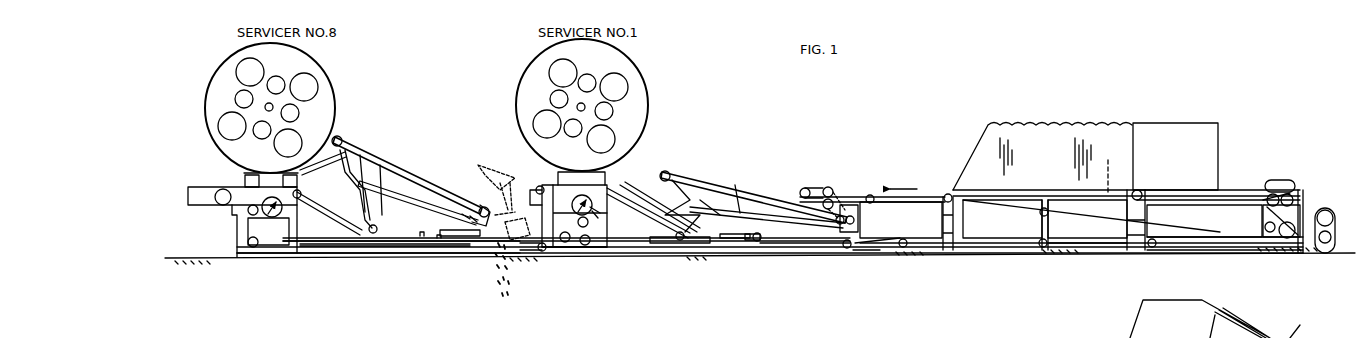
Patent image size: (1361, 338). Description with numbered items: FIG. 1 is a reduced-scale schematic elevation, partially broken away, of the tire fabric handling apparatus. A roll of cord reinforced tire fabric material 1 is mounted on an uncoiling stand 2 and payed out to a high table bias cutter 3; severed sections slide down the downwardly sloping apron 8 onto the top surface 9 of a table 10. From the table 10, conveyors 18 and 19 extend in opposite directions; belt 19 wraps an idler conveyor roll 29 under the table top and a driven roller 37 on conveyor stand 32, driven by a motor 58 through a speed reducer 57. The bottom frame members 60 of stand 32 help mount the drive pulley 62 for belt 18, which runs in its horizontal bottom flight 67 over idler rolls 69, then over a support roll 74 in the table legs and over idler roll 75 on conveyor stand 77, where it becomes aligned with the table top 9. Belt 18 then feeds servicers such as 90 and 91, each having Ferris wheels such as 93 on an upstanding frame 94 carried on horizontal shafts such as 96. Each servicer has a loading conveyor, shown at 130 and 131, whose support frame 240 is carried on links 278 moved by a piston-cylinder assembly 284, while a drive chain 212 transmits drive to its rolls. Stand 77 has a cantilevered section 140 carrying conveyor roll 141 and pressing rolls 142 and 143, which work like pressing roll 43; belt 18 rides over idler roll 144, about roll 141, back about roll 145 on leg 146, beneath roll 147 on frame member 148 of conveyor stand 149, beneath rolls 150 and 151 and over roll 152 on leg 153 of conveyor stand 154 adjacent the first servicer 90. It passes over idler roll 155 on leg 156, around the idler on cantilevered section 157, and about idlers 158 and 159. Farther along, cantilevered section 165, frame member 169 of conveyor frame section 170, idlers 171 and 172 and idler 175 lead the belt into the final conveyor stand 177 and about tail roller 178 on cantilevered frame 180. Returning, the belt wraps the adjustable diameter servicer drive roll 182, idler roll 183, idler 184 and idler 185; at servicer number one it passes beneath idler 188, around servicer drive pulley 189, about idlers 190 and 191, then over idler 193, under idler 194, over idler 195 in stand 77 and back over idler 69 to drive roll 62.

The roll of cord reinforced tire fabric material 1 is at (1290, 336).
The uncoiling stand 2 is at (1205, 315).
The high table bias cutter 3 is at (1085, 137).
The downwardly sloping apron 8 is at (975, 155).
The top surface of table 9 is at (1113, 169).
The table 10 is at (1068, 250).
The conveyor belt 18 is at (932, 197).
The conveyor belt 19 is at (1243, 190).
The conveyor roll 29 is at (1138, 190).
The conveyor stand 32 is at (1240, 254).
The driven roller 37 is at (1295, 196).
The pressing roll 43 is at (1275, 180).
The speed reducer 57 is at (1324, 244).
The motor 58 is at (1330, 213).
The bottom horizontally extending frame members 60 is at (1155, 247).
The drive pulley 62 is at (1287, 240).
The horizontal bottom flight 67 is at (1096, 246).
The idler rolls 69 is at (1040, 246).
The support roll 74 is at (1044, 208).
The idler roll 75 is at (948, 194).
The conveyor stand 77 is at (933, 255).
The servicer 90 is at (652, 75).
The servicer 91 is at (285, 108).
The Ferris wheel 93 is at (330, 110).
The upstanding frame 94 is at (240, 177).
The horizontally extending shaft 96 is at (265, 105).
The loading conveyor 130 is at (378, 152).
The loading conveyor 131 is at (705, 172).
The cantilevered section 140 is at (847, 197).
The conveyor roll 141 is at (803, 190).
The pressing roll 142 is at (828, 187).
The pressing roll 143 is at (812, 216).
The idler roll 144 is at (872, 196).
The roll 145 is at (855, 220).
The leg 146 is at (855, 254).
The roll 147 is at (846, 248).
The horizontal frame member 148 is at (803, 246).
The conveyor stand 149 is at (755, 258).
The roll 150 is at (759, 241).
The roll 151 is at (680, 240).
The roll 152 is at (610, 190).
The leg 153 is at (589, 245).
The conveyor stand 154 is at (578, 258).
The idler roll 155 is at (538, 188).
The leg 156 is at (543, 252).
The cantilevered section 157 is at (505, 185).
The idler 158 is at (568, 185).
The idler 159 is at (518, 242).
The cantilevered section 165 is at (482, 165).
The horizontally extending frame member 169 is at (312, 255).
The conveyor frame section 170 is at (368, 252).
The idler 171 is at (448, 240).
The idler 172 is at (447, 205).
The idler 175 is at (301, 193).
The conveyor stand 177 is at (282, 258).
The tail pulley 178 is at (222, 205).
The cantilevered frame 180 is at (200, 187).
The adjustable diameter servicer drive roll 182 is at (277, 218).
The idler roll 183 is at (250, 214).
The idler 184 is at (252, 247).
The idler 185 is at (423, 248).
The idler 188 is at (565, 243).
The servicer drive pulley 189 is at (592, 214).
The idler 190 is at (585, 218).
The idler 191 is at (585, 228).
The idler 193 is at (733, 244).
The idler 194 is at (858, 247).
The idler 195 is at (905, 247).
The drive chain 212 is at (500, 262).
The support frame 240 is at (427, 197).
The link 278 is at (374, 225).
The piston-cylinder assembly 284 is at (392, 243).